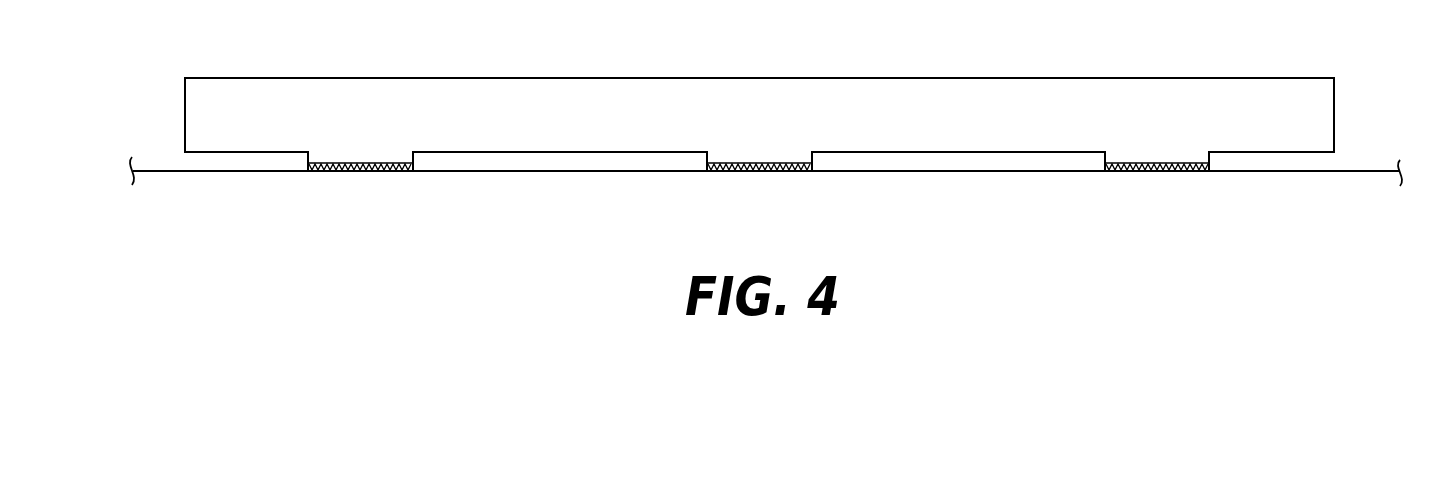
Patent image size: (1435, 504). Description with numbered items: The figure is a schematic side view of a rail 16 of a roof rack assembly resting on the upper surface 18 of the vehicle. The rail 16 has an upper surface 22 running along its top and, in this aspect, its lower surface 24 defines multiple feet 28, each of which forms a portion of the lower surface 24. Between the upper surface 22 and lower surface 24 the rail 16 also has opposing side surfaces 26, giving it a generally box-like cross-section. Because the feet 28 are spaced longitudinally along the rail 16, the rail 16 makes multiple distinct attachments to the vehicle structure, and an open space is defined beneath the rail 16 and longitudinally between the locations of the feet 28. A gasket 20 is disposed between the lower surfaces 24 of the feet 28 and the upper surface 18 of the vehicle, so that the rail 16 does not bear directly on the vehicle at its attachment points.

The rail 16 is at (1327, 77).
The upper surface of the vehicle 18 is at (1367, 171).
The gasket 20 is at (333, 170).
The upper surface 22 is at (702, 78).
The lower surface 24 is at (958, 153).
The side surfaces 26 is at (558, 130).
The feet 28 is at (380, 152).